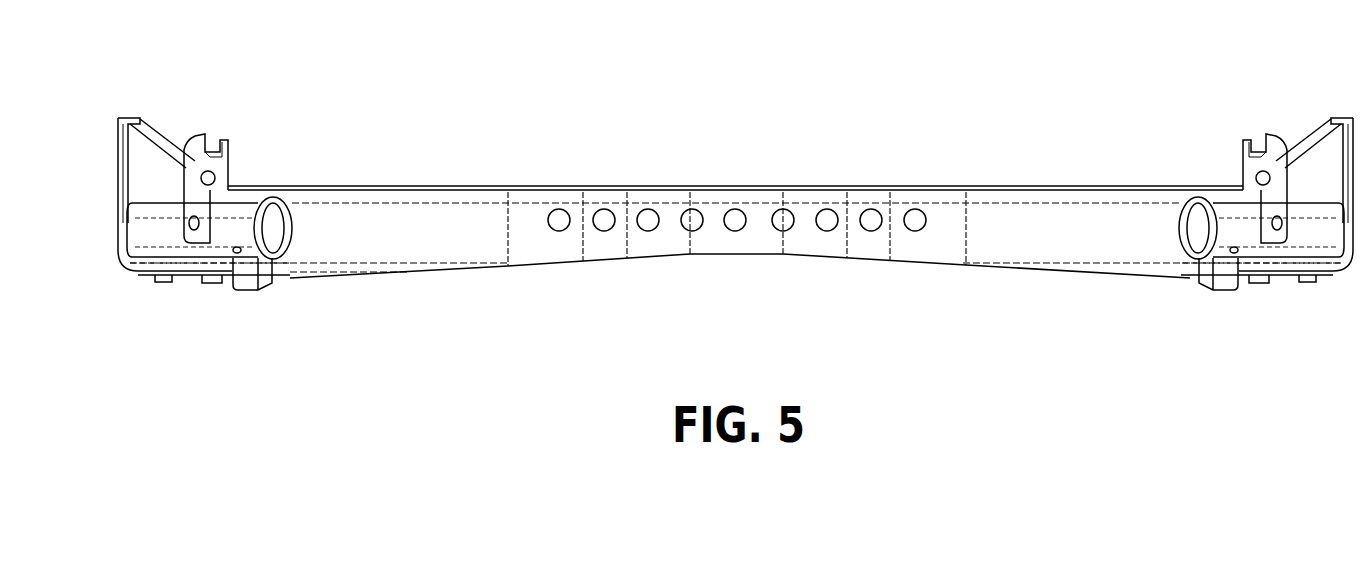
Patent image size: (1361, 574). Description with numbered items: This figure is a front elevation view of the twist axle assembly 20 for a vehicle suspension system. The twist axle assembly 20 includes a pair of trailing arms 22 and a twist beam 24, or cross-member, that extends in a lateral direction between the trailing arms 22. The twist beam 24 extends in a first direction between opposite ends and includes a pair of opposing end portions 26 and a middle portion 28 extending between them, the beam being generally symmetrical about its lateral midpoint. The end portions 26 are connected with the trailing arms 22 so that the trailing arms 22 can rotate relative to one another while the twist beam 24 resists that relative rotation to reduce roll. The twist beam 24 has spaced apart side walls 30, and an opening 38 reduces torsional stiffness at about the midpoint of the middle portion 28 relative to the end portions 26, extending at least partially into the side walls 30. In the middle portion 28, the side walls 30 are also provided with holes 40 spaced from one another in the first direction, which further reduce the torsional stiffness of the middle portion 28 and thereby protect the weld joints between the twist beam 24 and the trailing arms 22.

The twist axle assembly 20 is at (764, 106).
The trailing arms 22 is at (148, 143).
The twist beam 24 is at (841, 168).
The end portions 26 is at (326, 185).
The middle portion 28 is at (647, 185).
The side walls 30 is at (407, 240).
The opening 38 is at (670, 257).
The holes 40 is at (560, 230).